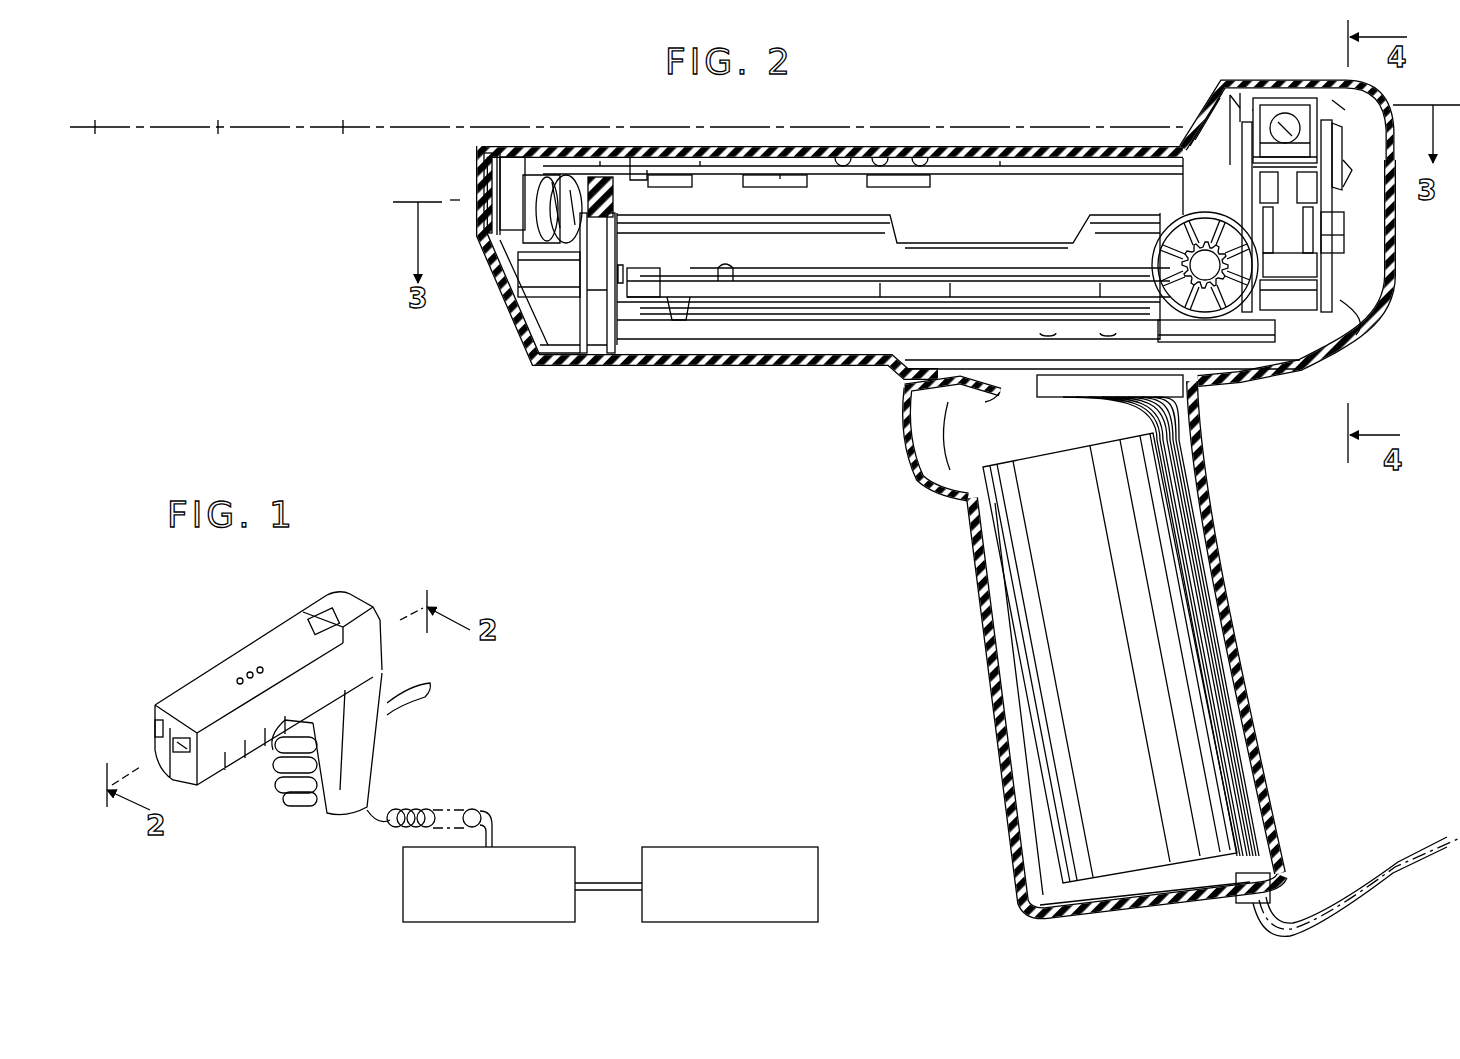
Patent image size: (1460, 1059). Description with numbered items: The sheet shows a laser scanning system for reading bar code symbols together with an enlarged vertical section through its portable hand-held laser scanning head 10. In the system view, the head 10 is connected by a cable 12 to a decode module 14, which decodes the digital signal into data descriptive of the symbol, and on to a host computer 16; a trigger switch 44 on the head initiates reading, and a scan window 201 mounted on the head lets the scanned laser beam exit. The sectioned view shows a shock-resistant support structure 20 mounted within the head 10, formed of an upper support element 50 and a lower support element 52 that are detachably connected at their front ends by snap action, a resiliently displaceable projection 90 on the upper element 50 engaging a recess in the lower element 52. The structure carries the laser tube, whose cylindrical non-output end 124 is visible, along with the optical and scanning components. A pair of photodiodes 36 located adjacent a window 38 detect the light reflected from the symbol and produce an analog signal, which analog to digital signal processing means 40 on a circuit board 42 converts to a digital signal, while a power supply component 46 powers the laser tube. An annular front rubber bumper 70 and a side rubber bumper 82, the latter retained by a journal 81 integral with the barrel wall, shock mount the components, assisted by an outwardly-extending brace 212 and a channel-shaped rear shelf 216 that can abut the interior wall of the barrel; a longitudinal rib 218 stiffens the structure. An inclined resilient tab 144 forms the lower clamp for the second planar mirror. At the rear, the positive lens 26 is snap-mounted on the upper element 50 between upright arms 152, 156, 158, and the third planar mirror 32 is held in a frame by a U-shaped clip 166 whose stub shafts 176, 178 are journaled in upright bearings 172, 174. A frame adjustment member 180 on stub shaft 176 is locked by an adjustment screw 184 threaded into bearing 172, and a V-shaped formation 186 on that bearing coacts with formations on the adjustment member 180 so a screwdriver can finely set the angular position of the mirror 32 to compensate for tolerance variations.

In FIG. 2, the portable hand-held laser scanning head 10 is at (800, 367).
In FIG. 1, the portable hand-held laser scanning head 10 is at (210, 670).
In FIG. 2, the cable 12 is at (1350, 890).
In FIG. 1, the cable 12 is at (403, 803).
In FIG. 1, the decode module 14 is at (530, 845).
In FIG. 1, the computer 16 is at (718, 845).
In FIG. 2, the shock-resistant support structure 20 is at (760, 317).
In FIG. 2, the positive lens 26 is at (1247, 173).
In FIG. 2, the third light-reflecting planar mirror 32 is at (1283, 117).
In FIG. 2, the sensor elements 36 is at (537, 197).
In FIG. 2, the window 38 is at (478, 203).
In FIG. 1, the window 38 is at (190, 747).
In FIG. 2, the analog to digital signal processing means 40 is at (662, 187).
In FIG. 2, the circuit board 42 is at (717, 181).
In FIG. 2, the trigger switch 44 is at (917, 447).
In FIG. 1, the trigger switch 44 is at (337, 763).
In FIG. 2, the power supply component 46 is at (1100, 641).
In FIG. 2, the upper support element 50 is at (808, 216).
In FIG. 2, the lower support element 52 is at (870, 313).
In FIG. 2, the annular front rubber bumper 70 is at (593, 353).
In FIG. 2, the journal 81 is at (1177, 233).
In FIG. 2, the side rubber bumper 82 is at (1160, 252).
In FIG. 2, the resiliently displaceable projection 90 is at (687, 313).
In FIG. 2, the non-output end of laser tube 124 is at (543, 293).
In FIG. 2, the lower clamping wall portion 144 is at (1297, 313).
In FIG. 2, the resilient upright arm 152 is at (1303, 253).
In FIG. 2, the upright arm 156 is at (1317, 190).
In FIG. 2, the upright arm 158 is at (1257, 187).
In FIG. 2, the U-shaped clip 166 is at (1293, 110).
In FIG. 2, the upright bearing 172 is at (1340, 103).
In FIG. 2, the upright bearing 174 is at (1243, 100).
In FIG. 2, the stub shaft 176 is at (1320, 120).
In FIG. 2, the stub shaft 178 is at (1243, 123).
In FIG. 2, the frame adjustment member 180 is at (1333, 137).
In FIG. 2, the adjustment screw 184 is at (1345, 165).
In FIG. 2, the V-shaped formation 186 is at (1337, 240).
In FIG. 2, the scan window 201 is at (1212, 110).
In FIG. 1, the scan window 201 is at (310, 620).
In FIG. 2, the brace 212 is at (733, 267).
In FIG. 2, the rear shelf 216 is at (1350, 317).
In FIG. 2, the longitudinal rib 218 is at (902, 277).